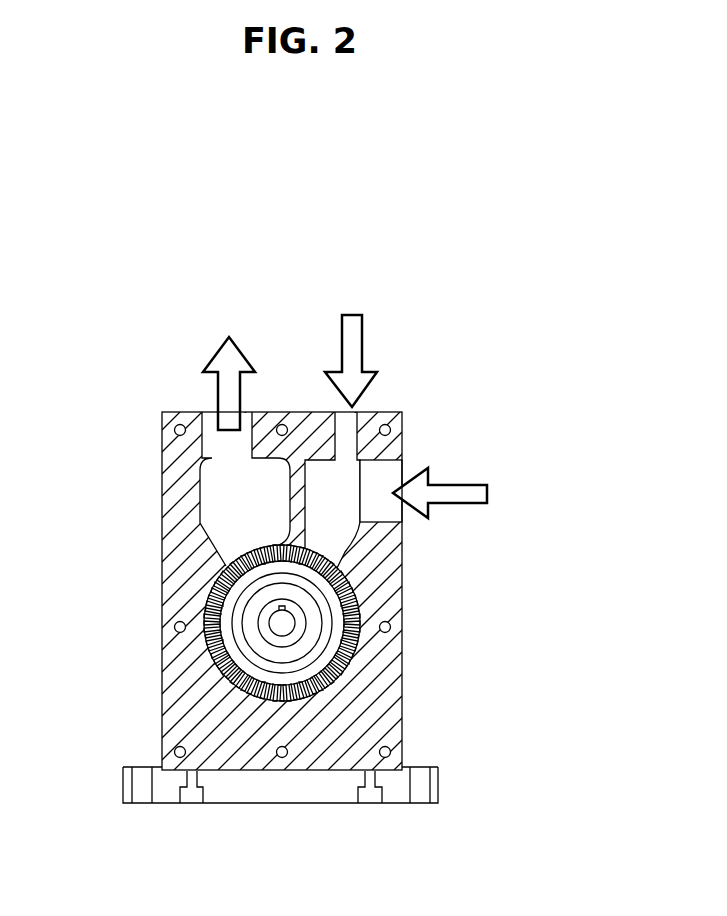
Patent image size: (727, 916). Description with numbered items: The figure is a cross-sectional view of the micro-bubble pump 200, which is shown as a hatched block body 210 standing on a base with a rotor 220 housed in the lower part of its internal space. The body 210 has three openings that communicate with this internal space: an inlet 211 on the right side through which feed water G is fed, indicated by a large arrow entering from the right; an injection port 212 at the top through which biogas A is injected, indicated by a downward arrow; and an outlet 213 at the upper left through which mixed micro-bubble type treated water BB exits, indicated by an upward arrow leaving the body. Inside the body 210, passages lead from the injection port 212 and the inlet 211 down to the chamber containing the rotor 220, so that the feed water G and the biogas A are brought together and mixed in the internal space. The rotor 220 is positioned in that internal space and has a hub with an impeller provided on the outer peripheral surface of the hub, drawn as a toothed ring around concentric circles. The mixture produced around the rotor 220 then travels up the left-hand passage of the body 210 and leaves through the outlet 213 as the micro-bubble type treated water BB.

The micro-bubble pump 200 is at (140, 233).
The body 210 is at (175, 679).
The inlet 211 is at (402, 466).
The injection port 212 is at (360, 428).
The outlet 213 is at (204, 433).
The rotor 220 is at (358, 624).
The biogas A is at (351, 343).
The feed water G is at (454, 493).
The mixed micro-bubble type treated water BB is at (229, 355).